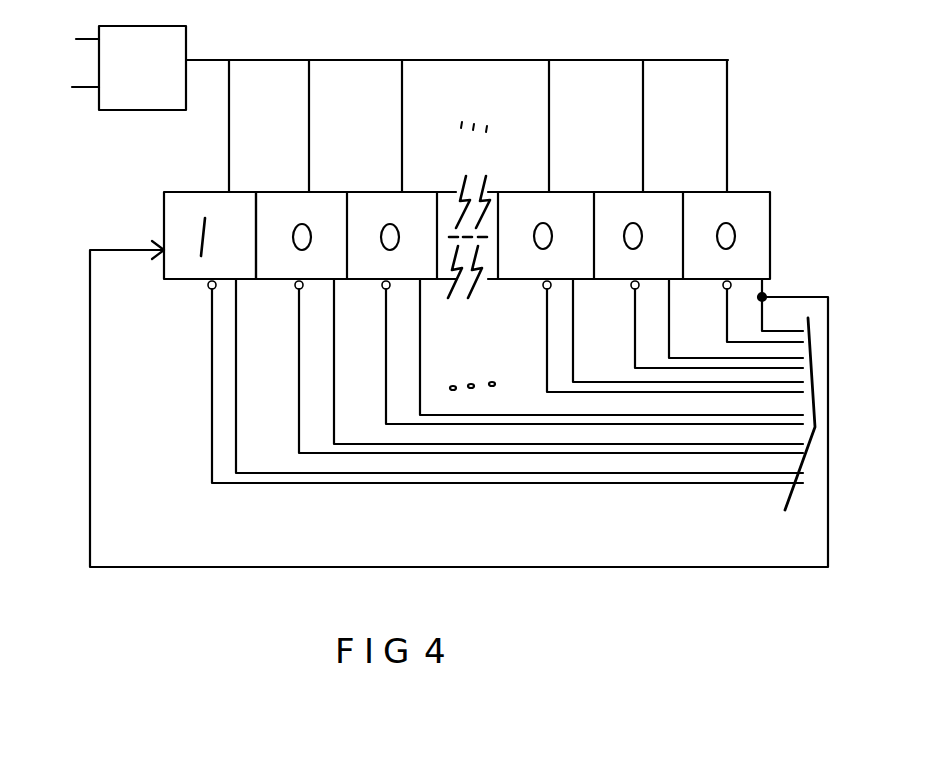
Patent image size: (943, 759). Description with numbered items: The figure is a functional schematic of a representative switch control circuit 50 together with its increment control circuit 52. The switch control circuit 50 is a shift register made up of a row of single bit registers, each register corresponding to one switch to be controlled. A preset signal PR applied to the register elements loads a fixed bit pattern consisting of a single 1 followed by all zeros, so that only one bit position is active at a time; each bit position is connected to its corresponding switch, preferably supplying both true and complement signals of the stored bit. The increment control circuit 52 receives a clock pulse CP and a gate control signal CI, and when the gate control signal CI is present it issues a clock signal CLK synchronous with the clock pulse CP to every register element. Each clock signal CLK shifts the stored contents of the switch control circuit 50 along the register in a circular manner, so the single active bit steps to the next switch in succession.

The switch control circuit 50 is at (483, 210).
The increment control circuit 52 is at (107, 97).
The single one bit 1 is at (210, 235).
The preset signal PR is at (191, 184).
The clock signal CLK is at (457, 112).
The gate control signal CI is at (64, 42).
The clock pulse CP is at (63, 89).